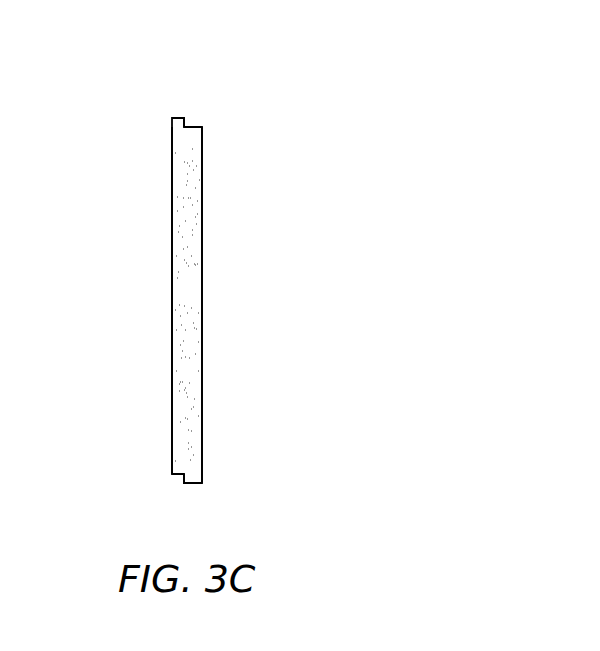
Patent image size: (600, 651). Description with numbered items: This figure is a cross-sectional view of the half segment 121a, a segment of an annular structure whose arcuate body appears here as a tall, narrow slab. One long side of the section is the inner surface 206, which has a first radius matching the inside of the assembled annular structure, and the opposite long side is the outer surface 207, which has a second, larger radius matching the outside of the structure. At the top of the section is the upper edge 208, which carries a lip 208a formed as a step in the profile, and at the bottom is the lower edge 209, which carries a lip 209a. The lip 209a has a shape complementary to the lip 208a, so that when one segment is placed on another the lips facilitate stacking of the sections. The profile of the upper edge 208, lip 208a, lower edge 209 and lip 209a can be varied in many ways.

The half segment 121a is at (245, 72).
The inner surface 206 is at (172, 193).
The outer surface 207 is at (202, 188).
The upper edge 208 is at (177, 117).
The lip 208a is at (193, 124).
The lower edge 209 is at (192, 483).
The lip 209a is at (178, 476).